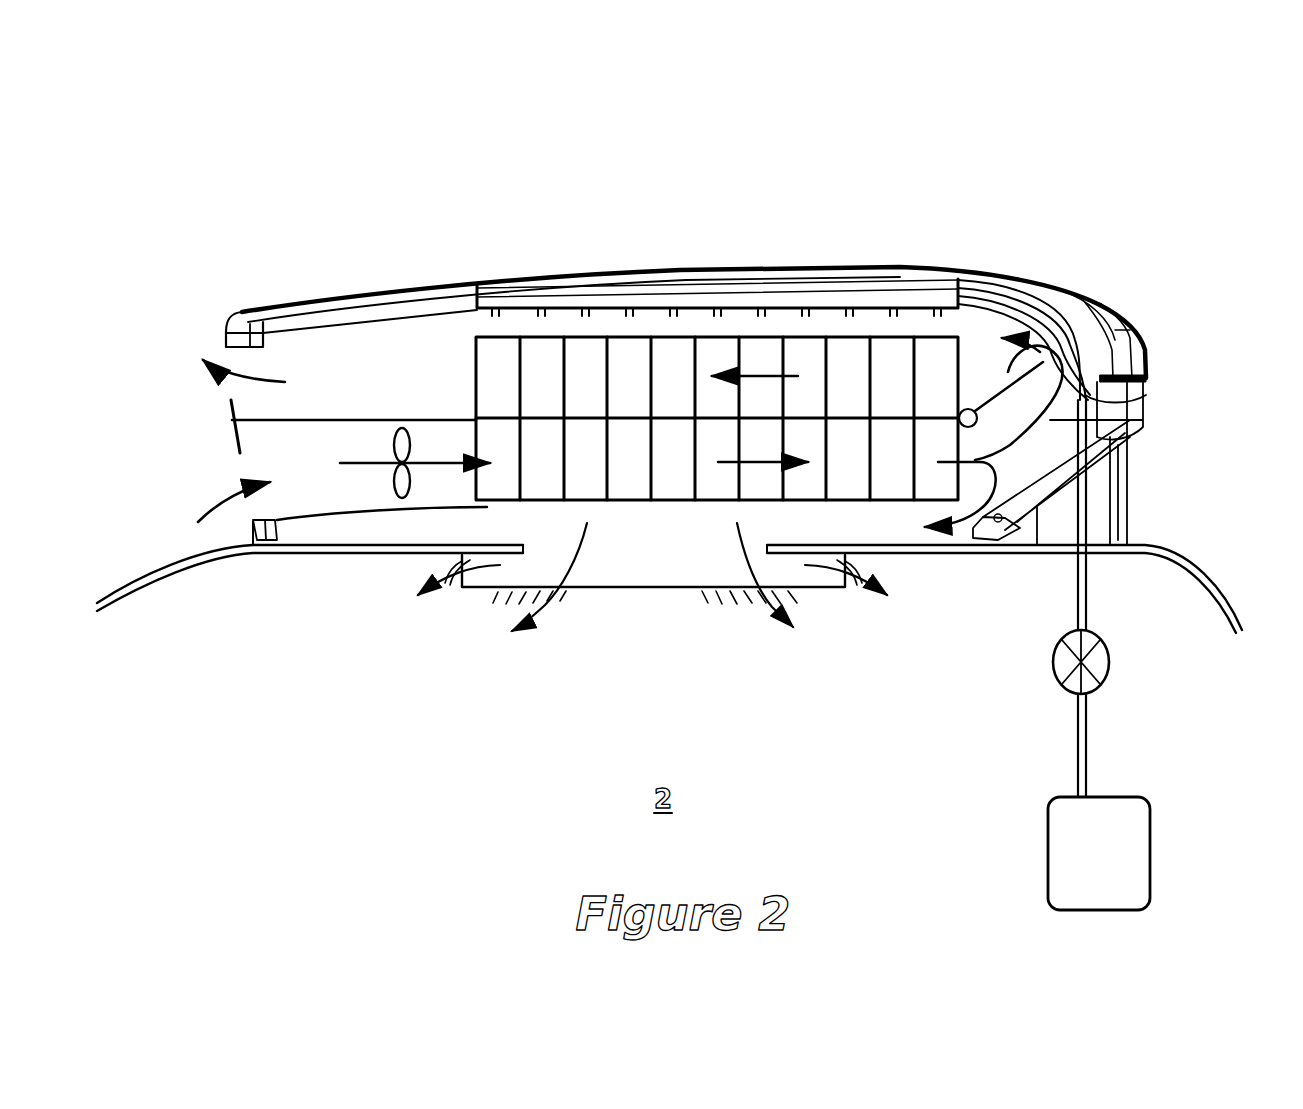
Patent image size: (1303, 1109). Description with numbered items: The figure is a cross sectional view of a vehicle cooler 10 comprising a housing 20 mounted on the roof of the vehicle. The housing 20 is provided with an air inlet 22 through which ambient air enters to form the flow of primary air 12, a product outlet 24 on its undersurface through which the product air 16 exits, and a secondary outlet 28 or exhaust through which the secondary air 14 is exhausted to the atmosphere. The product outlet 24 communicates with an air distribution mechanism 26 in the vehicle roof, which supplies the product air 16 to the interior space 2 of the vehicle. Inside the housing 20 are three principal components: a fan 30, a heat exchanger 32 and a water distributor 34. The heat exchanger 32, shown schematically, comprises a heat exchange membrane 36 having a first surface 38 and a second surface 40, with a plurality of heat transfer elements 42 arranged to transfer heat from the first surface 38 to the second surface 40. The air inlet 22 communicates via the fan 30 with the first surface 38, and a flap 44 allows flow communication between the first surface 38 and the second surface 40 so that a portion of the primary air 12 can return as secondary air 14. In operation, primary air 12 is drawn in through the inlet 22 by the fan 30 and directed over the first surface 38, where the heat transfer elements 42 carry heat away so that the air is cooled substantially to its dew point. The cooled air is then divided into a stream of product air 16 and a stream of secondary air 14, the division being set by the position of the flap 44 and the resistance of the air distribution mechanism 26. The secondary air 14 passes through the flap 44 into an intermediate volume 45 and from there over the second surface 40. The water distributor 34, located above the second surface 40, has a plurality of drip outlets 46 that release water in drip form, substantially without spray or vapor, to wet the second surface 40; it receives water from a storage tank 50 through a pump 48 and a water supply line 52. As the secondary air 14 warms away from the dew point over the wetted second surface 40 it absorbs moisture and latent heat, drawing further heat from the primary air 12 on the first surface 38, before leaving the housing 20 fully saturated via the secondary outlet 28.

The interior space 2 is at (142, 590).
The vehicle cooler 10 is at (787, 212).
The primary air 12 is at (228, 510).
The secondary air 14 is at (215, 374).
The product air 16 is at (762, 605).
The housing 20 is at (1130, 340).
The air inlet 22 is at (250, 466).
The product outlet 24 is at (563, 548).
The air distribution mechanism 26 is at (641, 592).
The secondary outlet 28 is at (215, 343).
The fan 30 is at (398, 437).
The heat exchanger 32 is at (532, 340).
The water distributor 34 is at (655, 310).
The heat exchange membrane 36 is at (585, 380).
The first surface 38 is at (892, 453).
The second surface 40 is at (843, 360).
The heat transfer elements 42 is at (925, 378).
The flap 44 is at (1007, 367).
The intermediate volume 45 is at (1090, 405).
The drip outlets 46 is at (730, 314).
The pump 48 is at (1053, 658).
The storage tank 50 is at (1047, 853).
The water supply line 52 is at (1087, 598).